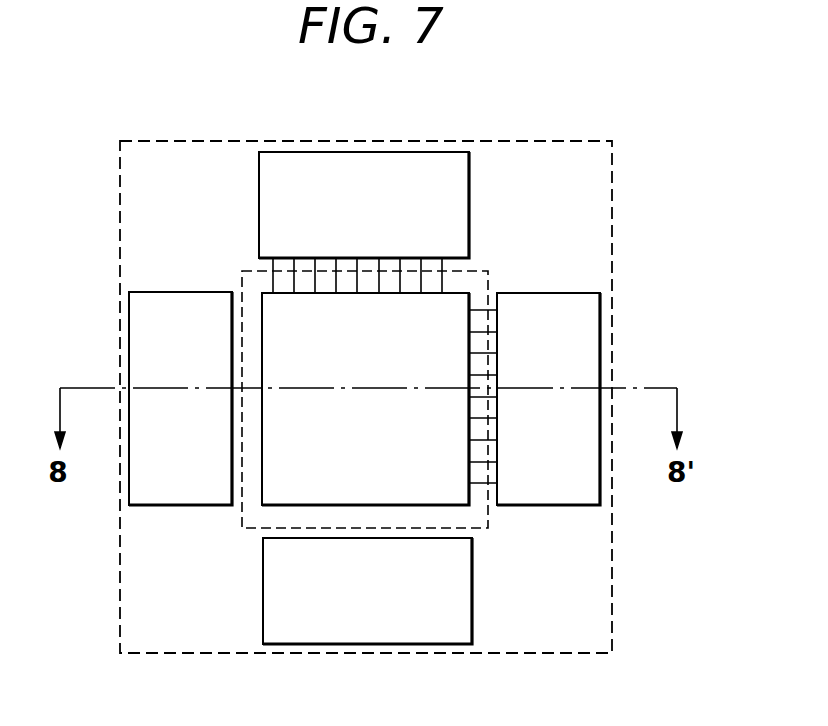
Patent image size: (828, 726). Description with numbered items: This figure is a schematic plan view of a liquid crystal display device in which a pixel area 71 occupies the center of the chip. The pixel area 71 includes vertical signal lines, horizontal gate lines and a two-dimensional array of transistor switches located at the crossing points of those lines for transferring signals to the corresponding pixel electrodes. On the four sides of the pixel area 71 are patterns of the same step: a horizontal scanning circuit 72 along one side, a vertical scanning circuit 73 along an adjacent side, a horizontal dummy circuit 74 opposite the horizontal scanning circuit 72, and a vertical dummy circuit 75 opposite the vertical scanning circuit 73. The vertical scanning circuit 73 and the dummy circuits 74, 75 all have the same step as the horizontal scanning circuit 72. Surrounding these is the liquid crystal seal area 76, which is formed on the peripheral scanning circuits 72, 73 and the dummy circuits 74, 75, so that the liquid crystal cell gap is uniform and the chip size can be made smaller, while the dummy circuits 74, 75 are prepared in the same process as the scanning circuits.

The pixel area 71 is at (365, 308).
The horizontal scanning circuit 72 is at (287, 168).
The vertical scanning circuit 73 is at (589, 318).
The horizontal dummy circuit 74 is at (287, 630).
The vertical dummy circuit 75 is at (145, 340).
The liquid crystal seal area 76 is at (540, 157).